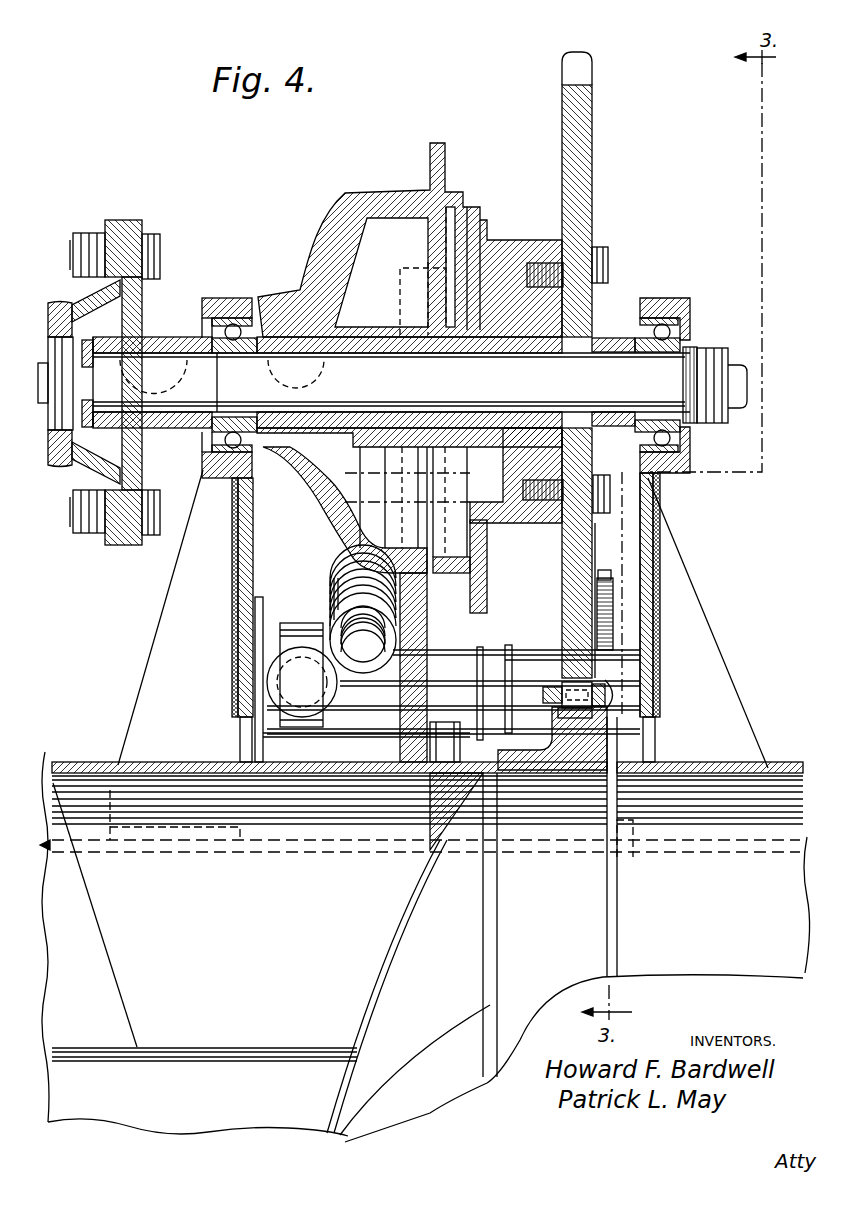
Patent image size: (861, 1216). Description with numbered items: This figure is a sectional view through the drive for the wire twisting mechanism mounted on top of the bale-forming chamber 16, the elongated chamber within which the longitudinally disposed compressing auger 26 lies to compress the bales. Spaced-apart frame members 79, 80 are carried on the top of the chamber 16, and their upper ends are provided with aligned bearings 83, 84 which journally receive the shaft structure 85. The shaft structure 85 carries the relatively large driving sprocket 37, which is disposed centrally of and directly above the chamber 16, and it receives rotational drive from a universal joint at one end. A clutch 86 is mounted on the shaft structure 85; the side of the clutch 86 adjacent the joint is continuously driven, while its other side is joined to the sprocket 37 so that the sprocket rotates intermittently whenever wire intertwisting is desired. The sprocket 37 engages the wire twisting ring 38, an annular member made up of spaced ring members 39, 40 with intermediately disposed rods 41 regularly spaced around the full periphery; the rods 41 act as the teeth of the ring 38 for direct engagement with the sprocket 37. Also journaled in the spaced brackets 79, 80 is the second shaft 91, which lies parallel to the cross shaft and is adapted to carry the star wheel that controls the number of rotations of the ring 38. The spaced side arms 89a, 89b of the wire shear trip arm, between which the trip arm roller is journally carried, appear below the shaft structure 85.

The bale forming chamber 16 is at (44, 792).
The compressing auger 26 is at (153, 1058).
The driving sprocket 37 is at (592, 90).
The wire twisting ring 38 is at (618, 748).
The ring member 39 is at (616, 704).
The ring member 40 is at (548, 674).
The rods 41 is at (573, 687).
The frame member 79 is at (173, 628).
The frame member 80 is at (707, 600).
The bearing 83 is at (228, 300).
The bearing 84 is at (662, 290).
The shaft structure 85 is at (613, 350).
The clutch 86 is at (478, 172).
The side arm 89a is at (479, 648).
The side arm 89b is at (509, 645).
The second shaft 91 is at (393, 703).